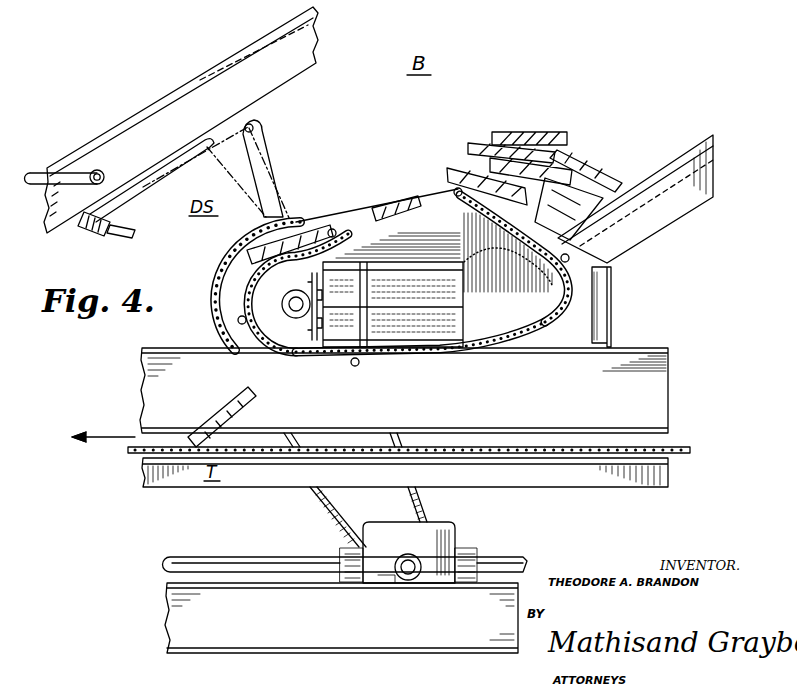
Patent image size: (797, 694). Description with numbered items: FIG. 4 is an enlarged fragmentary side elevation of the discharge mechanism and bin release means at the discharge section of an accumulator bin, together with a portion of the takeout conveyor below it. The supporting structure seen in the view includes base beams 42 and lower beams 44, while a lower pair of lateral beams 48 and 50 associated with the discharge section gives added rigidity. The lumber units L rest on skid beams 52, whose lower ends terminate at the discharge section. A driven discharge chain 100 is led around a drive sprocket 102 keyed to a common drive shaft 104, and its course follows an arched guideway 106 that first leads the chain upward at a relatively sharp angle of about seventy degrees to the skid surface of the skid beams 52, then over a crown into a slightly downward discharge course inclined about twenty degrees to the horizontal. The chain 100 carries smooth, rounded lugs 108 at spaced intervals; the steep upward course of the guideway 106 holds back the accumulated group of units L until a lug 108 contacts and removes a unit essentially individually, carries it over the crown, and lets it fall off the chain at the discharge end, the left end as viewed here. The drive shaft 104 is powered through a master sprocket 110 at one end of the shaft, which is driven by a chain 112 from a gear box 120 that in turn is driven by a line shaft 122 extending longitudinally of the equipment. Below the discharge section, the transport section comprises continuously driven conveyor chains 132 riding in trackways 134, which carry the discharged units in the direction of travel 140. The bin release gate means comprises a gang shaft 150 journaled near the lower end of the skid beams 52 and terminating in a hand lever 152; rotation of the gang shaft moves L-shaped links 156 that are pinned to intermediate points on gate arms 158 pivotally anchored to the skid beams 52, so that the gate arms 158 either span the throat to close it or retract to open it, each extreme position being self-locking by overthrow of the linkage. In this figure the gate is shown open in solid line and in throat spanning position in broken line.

The base beams 42 is at (300, 640).
The lower beams 44 is at (633, 350).
The lower lateral beam 48 is at (372, 322).
The lower lateral beam 50 is at (612, 287).
The skid beams 52 is at (163, 115).
The discharge chains 100 is at (428, 354).
The drive sprocket 102 is at (285, 340).
The drive shaft 104 is at (290, 297).
The chain guideways 106 is at (509, 252).
The lugs 108 is at (332, 229).
The master sprocket 110 is at (230, 296).
The chain 112 is at (323, 491).
The gear box 120 is at (457, 528).
The line shaft 122 is at (222, 559).
The conveyor chains 132 is at (132, 449).
The trackways 134 is at (147, 488).
The direction of travel 140 is at (108, 434).
The gang shaft 150 is at (101, 171).
The hand lever 152 is at (58, 172).
The L-shaped links 156 is at (207, 151).
The gate arms 158 is at (268, 175).
The lumber units L is at (472, 148).